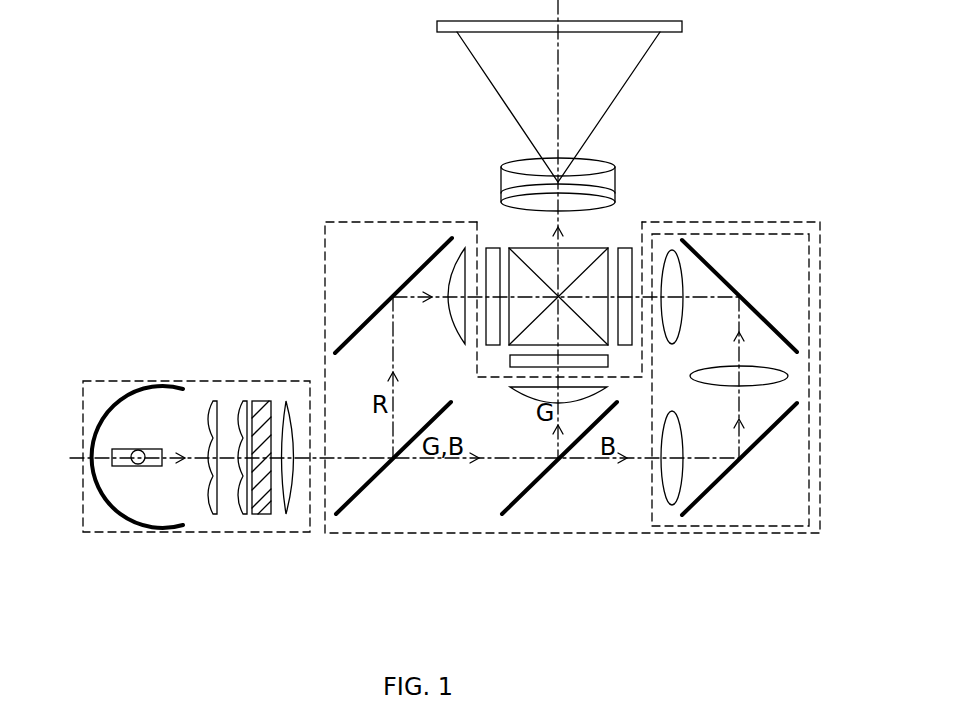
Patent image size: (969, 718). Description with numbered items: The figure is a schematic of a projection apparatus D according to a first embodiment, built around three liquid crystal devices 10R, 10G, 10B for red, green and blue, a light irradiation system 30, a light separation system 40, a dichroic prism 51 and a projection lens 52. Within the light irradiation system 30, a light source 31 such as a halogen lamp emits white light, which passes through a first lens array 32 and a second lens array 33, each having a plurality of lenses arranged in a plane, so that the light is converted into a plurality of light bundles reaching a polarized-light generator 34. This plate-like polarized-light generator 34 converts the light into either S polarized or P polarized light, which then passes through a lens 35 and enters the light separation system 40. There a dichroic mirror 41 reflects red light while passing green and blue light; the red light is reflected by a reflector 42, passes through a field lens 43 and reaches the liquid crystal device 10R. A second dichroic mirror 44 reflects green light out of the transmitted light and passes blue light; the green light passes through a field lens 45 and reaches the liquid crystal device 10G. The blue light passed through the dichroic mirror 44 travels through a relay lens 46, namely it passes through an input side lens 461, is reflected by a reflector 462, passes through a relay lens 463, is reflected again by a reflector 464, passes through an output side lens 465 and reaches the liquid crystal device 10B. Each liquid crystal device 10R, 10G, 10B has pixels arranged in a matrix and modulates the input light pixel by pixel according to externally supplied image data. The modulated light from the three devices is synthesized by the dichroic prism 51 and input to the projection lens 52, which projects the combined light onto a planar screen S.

The light irradiation system 30 is at (172, 534).
The light source 31 is at (140, 394).
The first lens array 32 is at (212, 400).
The second lens array 33 is at (243, 400).
The polarized-light generator 34 is at (262, 516).
The lens 35 is at (286, 400).
The light separation system 40 is at (463, 535).
The dichroic mirror 41 is at (370, 487).
The reflector 42 is at (417, 266).
The field lens 43 is at (452, 328).
The dichroic mirror 44 is at (537, 487).
The field lens 45 is at (517, 397).
The relay lens 46 is at (730, 528).
The input side lens 461 is at (660, 467).
The reflector 462 is at (717, 487).
The relay lens 463 is at (715, 387).
The reflector 464 is at (755, 312).
The output side lens 465 is at (680, 317).
The liquid crystal device 10R is at (486, 248).
The liquid crystal device 10G is at (510, 360).
The liquid crystal device 10B is at (633, 247).
The dichroic prism 51 is at (542, 247).
The projection lens 52 is at (616, 183).
The screen S is at (597, 33).
The projection apparatus D is at (262, 300).